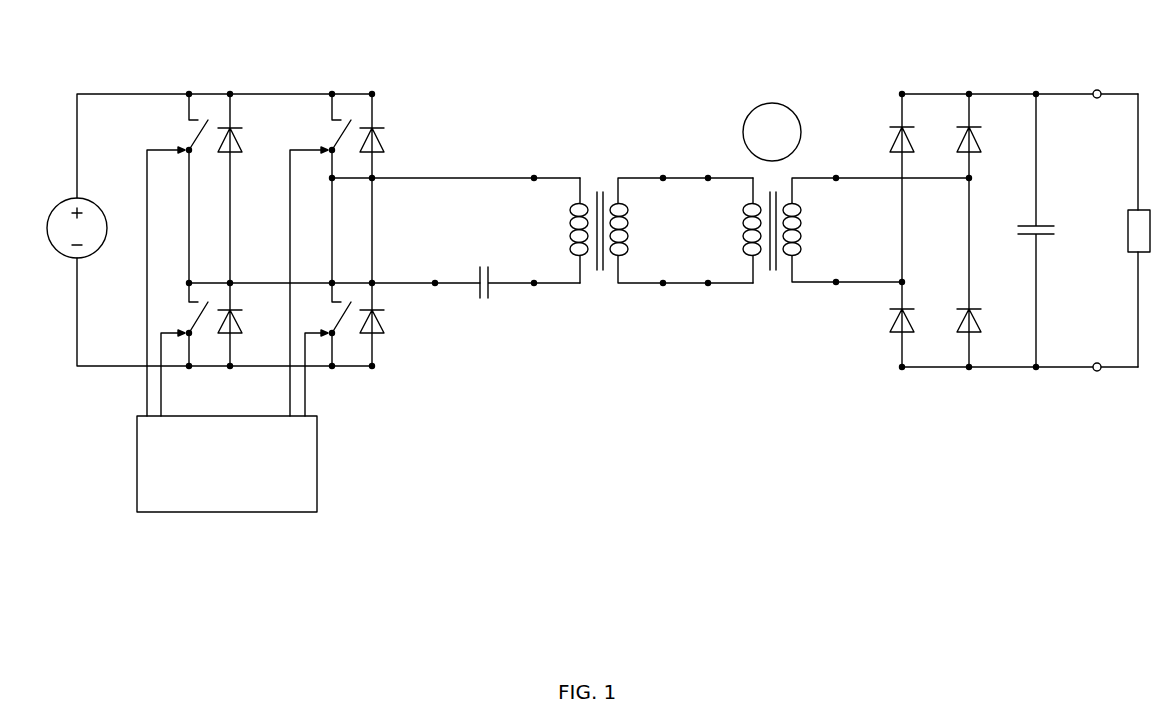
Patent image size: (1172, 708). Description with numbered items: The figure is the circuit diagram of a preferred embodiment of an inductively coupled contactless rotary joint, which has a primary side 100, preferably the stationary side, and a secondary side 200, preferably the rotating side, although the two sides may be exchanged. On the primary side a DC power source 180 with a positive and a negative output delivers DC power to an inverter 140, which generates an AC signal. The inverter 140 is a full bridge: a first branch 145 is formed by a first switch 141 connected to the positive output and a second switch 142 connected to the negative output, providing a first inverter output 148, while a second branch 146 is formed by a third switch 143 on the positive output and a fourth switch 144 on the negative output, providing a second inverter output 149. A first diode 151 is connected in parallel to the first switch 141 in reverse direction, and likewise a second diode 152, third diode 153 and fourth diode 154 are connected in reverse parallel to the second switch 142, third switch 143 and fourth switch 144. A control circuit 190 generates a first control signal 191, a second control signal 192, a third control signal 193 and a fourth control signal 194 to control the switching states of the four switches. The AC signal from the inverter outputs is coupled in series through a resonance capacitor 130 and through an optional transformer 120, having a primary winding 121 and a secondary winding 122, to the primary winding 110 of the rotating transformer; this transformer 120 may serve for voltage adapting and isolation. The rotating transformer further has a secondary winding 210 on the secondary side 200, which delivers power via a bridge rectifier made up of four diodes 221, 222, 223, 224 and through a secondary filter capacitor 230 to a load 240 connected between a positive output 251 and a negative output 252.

The primary side 100 is at (695, 94).
The primary winding 110 is at (744, 229).
The transformer 120 is at (590, 149).
The primary winding 121 is at (569, 229).
The secondary winding 122 is at (629, 229).
The resonance capacitor 130 is at (478, 268).
The inverter 140 is at (391, 67).
The first switch 141 is at (196, 134).
The second switch 142 is at (196, 314).
The third switch 143 is at (339, 134).
The fourth switch 144 is at (339, 314).
The first branch 145 is at (213, 68).
The second branch 146 is at (349, 70).
The first inverter output 148 is at (407, 281).
The second inverter output 149 is at (407, 181).
The first diode 151 is at (236, 137).
The second diode 152 is at (236, 318).
The third diode 153 is at (378, 137).
The fourth diode 154 is at (378, 318).
The DC power source 180 is at (88, 200).
The control circuit 190 is at (224, 493).
The first control signal 191 is at (146, 398).
The second control signal 192 is at (163, 397).
The third control signal 193 is at (289, 397).
The fourth control signal 194 is at (307, 397).
The secondary side 200 is at (848, 94).
The secondary winding 210 is at (801, 228).
The diode 221 is at (889, 140).
The diode 222 is at (981, 140).
The diode 223 is at (889, 322).
The diode 224 is at (981, 322).
The secondary filter capacitor 230 is at (1030, 224).
The load 240 is at (1127, 232).
The positive output 251 is at (1097, 99).
The negative output 252 is at (1097, 362).